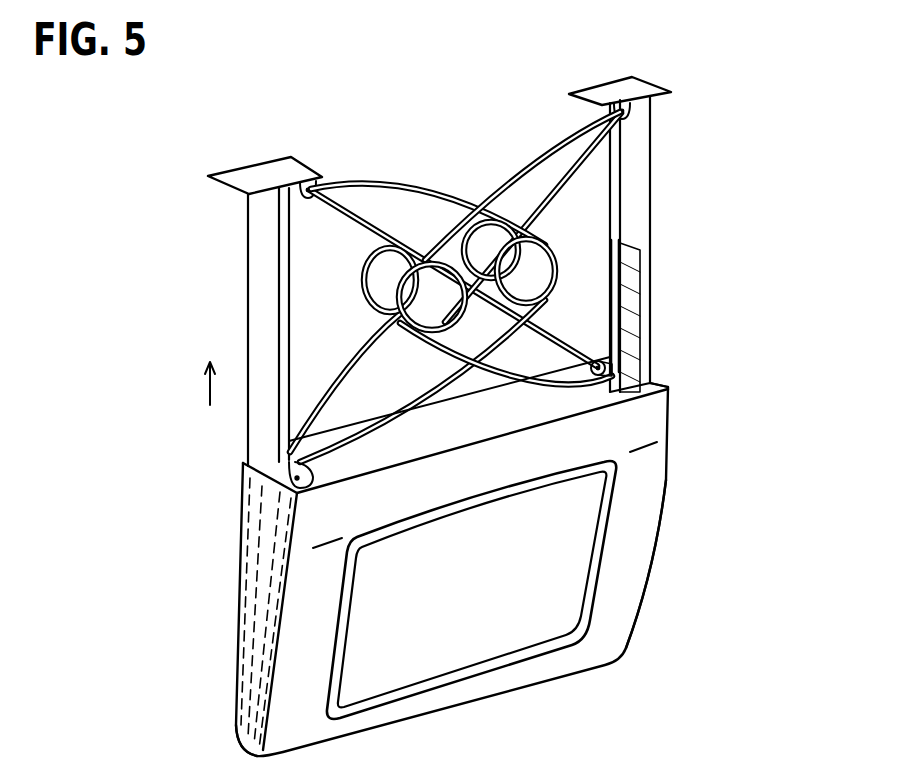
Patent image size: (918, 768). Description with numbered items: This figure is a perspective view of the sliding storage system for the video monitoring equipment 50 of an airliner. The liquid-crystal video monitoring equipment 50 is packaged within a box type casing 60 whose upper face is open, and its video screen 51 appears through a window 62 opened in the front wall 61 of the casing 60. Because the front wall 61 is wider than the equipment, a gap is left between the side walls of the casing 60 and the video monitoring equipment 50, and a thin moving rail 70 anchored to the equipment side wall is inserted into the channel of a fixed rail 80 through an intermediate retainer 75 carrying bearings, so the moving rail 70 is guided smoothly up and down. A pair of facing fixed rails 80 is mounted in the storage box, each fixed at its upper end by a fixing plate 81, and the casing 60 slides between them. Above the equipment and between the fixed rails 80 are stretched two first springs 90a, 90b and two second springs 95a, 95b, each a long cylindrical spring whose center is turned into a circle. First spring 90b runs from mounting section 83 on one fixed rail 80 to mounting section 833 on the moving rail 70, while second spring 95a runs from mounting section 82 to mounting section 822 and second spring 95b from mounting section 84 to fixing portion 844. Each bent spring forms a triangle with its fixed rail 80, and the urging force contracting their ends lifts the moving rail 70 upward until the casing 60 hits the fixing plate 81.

The video monitoring equipment 50 is at (553, 410).
The video screen 51 is at (477, 647).
The casing 60 is at (228, 619).
The front wall 61 is at (637, 570).
The window 62 is at (555, 653).
The moving rail 70 is at (262, 648).
The intermediate retainer 75 is at (627, 278).
The fixed rail 80 is at (257, 271).
The fixing plate 81 is at (250, 180).
The mounting section 82 is at (318, 186).
The mounting section 83 is at (565, 93).
The mounting section 84 is at (640, 113).
The first spring 90a is at (363, 223).
The first spring 90b is at (550, 192).
The second spring 95a is at (417, 190).
The second spring 95b is at (547, 157).
The mounting section 822 is at (283, 466).
The mounting section 833 is at (612, 362).
The fixing portion 844 is at (657, 374).